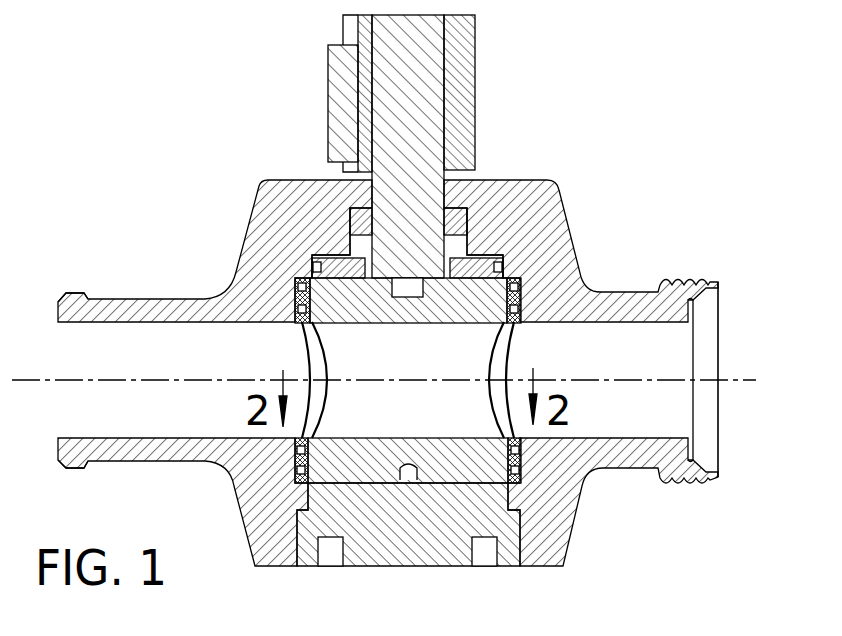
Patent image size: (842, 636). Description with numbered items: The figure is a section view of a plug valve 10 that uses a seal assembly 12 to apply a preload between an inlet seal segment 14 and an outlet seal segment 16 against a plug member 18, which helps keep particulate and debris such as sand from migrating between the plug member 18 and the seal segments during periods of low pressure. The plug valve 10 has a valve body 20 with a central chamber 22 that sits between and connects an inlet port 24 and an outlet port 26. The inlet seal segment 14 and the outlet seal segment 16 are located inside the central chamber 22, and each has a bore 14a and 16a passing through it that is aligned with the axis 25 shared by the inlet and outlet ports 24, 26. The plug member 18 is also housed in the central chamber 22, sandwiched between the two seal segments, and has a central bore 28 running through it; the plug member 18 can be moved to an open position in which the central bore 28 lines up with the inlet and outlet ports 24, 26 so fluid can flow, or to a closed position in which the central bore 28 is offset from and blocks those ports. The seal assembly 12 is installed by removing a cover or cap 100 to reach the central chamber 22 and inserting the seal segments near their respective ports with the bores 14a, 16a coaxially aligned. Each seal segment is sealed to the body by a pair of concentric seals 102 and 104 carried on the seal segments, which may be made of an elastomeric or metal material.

The plug valve 10 is at (536, 102).
The seal assembly 12 is at (484, 423).
The inlet seal segment 14 is at (521, 352).
The bore 14a is at (497, 335).
The outlet seal segment 16 is at (304, 350).
The bore 16a is at (329, 402).
The plug member 18 is at (527, 292).
The valve body 20 is at (528, 180).
The central chamber 22 is at (535, 292).
The inlet port 24 is at (720, 350).
The axis 25 is at (28, 380).
The outlet port 26 is at (58, 361).
The central bore 28 is at (392, 322).
The cover or cap 100 is at (400, 566).
The concentric seal 102 is at (297, 293).
The concentric seal 104 is at (298, 310).